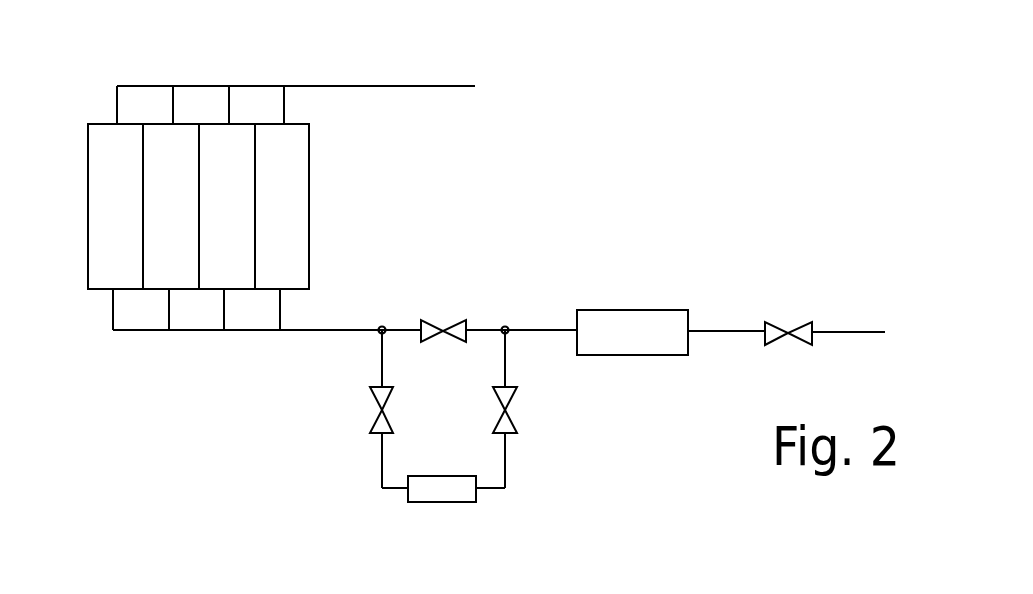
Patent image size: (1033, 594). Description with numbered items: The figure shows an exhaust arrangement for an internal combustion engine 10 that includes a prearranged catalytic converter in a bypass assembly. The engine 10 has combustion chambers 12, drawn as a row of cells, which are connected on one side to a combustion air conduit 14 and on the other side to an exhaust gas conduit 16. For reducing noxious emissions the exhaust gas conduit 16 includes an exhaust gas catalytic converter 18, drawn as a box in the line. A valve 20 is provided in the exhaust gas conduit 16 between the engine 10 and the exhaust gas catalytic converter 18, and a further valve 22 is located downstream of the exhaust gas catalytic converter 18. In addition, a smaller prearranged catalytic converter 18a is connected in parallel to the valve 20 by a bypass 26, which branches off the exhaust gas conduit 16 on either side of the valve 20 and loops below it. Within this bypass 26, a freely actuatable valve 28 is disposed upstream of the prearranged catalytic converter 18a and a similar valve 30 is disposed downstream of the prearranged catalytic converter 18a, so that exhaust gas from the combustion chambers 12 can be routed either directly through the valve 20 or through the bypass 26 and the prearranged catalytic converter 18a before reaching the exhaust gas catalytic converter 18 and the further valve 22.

The internal combustion engine 10 is at (287, 207).
The combustion chambers 12 is at (107, 177).
The combustion air conduit 14 is at (210, 85).
The exhaust gas conduit 16 is at (302, 333).
The exhaust gas catalytic converter 18 is at (635, 308).
The prearranged catalytic converter 18a is at (443, 502).
The valve 20 is at (435, 325).
The further valve 22 is at (787, 327).
The bypass 26 is at (505, 485).
The freely actuatable valve 28 is at (377, 398).
The valve 30 is at (508, 402).